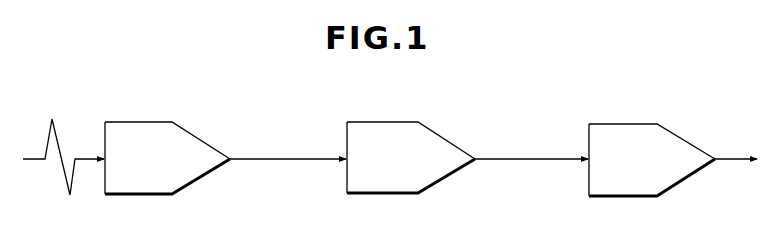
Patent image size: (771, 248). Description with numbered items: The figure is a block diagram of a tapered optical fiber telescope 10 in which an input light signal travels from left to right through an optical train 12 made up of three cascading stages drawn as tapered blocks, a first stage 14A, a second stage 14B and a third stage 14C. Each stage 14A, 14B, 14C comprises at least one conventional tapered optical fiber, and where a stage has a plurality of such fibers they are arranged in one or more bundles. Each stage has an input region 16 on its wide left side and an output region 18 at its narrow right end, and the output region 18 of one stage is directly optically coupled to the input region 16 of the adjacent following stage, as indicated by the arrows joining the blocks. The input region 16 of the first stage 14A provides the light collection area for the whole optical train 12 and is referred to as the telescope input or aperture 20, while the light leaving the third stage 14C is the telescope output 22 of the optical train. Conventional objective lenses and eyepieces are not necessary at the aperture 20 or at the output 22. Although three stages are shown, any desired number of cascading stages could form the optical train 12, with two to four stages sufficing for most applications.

The optical fiber telescope 10 is at (456, 96).
The optical train 12 is at (473, 170).
The first stage 14A is at (145, 121).
The second stage 14B is at (373, 121).
The third stage 14C is at (622, 123).
The input region 16 is at (104, 188).
The output region 18 is at (227, 163).
The telescope input or aperture 20 is at (105, 141).
The telescope output 22 is at (707, 155).